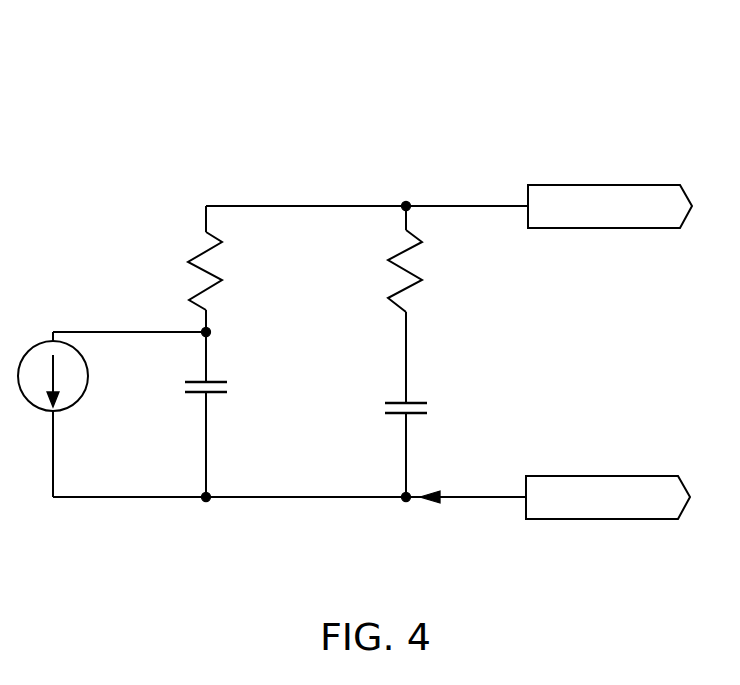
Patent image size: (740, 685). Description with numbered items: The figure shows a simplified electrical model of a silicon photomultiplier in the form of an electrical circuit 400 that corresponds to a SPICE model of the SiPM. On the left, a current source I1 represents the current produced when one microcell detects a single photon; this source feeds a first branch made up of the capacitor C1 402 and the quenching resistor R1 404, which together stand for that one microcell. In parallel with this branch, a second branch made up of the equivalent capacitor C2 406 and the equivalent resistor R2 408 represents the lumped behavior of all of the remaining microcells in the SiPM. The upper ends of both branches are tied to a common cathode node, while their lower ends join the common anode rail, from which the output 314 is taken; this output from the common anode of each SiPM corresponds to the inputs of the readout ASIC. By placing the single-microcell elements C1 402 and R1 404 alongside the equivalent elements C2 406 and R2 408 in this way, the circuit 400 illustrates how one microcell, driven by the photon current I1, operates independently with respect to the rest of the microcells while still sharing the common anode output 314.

The electrical circuit 400 is at (563, 87).
The quenching resistor 404 is at (188, 277).
The capacitor 402 is at (192, 396).
The equivalent resistor 408 is at (388, 258).
The equivalent capacitor 406 is at (393, 418).
The output 314 is at (490, 500).
The current I1 is at (132, 331).
The quenching resistor R1 is at (224, 243).
The capacitor C1 is at (215, 382).
The equivalent resistor R2 is at (422, 280).
The equivalent capacitor C2 is at (415, 403).